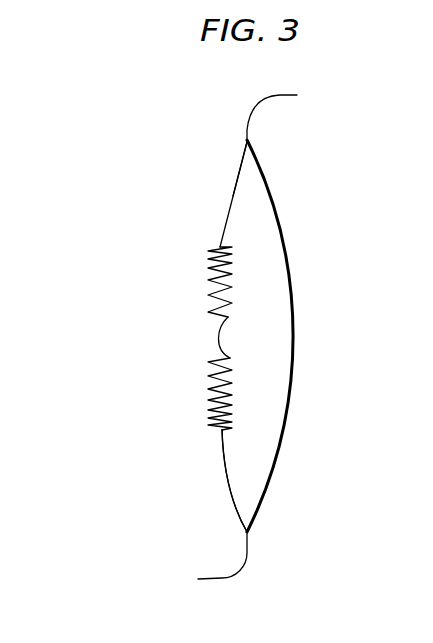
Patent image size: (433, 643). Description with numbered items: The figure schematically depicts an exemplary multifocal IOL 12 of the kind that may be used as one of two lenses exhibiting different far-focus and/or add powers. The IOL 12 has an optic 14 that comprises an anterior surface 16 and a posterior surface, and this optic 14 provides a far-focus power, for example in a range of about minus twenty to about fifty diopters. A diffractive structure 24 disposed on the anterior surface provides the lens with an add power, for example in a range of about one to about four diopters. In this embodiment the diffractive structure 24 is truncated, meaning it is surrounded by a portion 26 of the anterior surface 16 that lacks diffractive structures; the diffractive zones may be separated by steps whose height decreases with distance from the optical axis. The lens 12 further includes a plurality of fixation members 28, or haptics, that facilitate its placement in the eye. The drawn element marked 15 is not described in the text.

The multifocal IOL 12 is at (112, 106).
The optic 14 is at (222, 146).
The bowed second leg 15 is at (293, 328).
The anterior surface 16 is at (220, 433).
The diffractive structure 24 is at (205, 245).
The portion of the anterior surface lacking diffractive structures 26 is at (238, 142).
The fixation members 28 is at (278, 94).